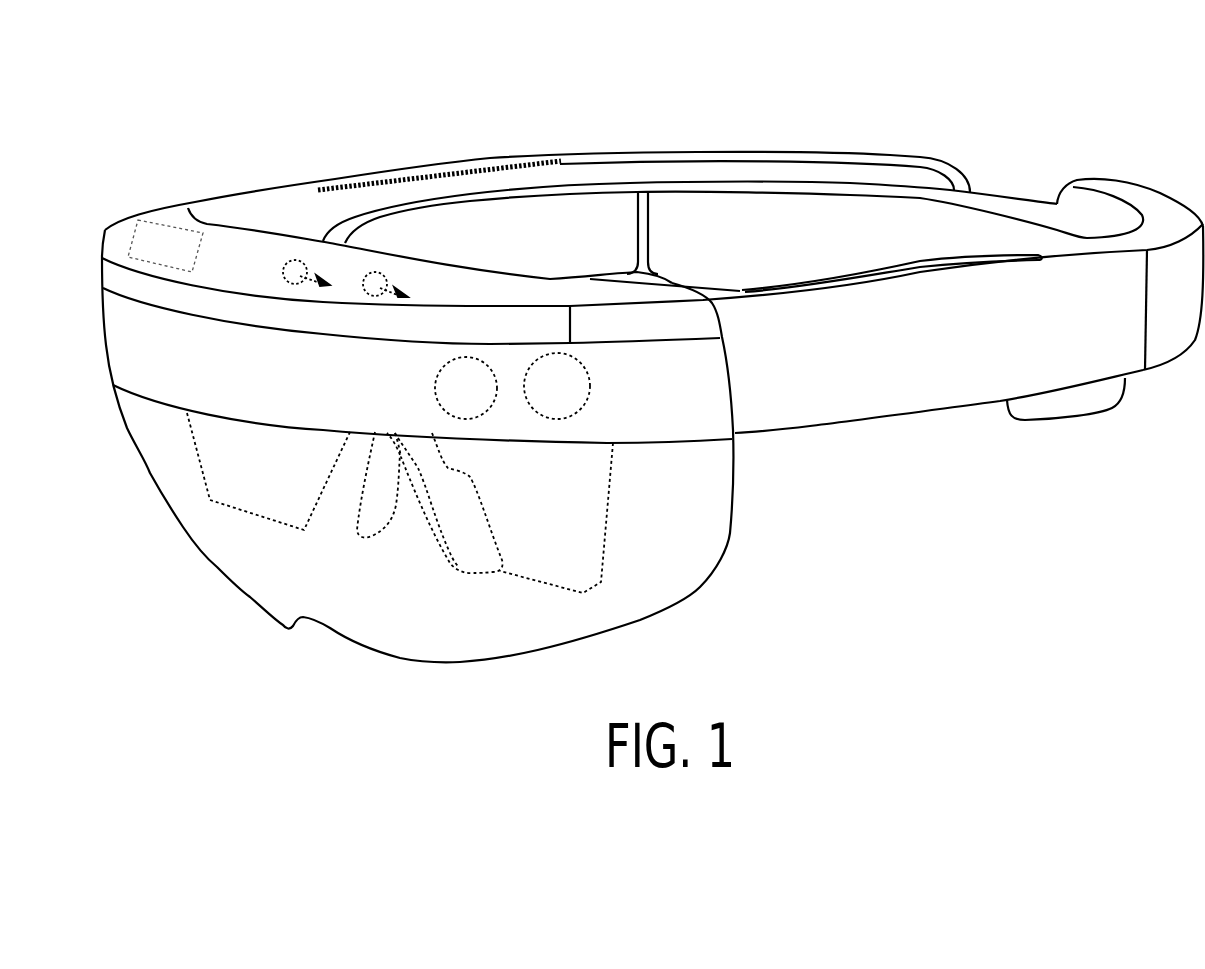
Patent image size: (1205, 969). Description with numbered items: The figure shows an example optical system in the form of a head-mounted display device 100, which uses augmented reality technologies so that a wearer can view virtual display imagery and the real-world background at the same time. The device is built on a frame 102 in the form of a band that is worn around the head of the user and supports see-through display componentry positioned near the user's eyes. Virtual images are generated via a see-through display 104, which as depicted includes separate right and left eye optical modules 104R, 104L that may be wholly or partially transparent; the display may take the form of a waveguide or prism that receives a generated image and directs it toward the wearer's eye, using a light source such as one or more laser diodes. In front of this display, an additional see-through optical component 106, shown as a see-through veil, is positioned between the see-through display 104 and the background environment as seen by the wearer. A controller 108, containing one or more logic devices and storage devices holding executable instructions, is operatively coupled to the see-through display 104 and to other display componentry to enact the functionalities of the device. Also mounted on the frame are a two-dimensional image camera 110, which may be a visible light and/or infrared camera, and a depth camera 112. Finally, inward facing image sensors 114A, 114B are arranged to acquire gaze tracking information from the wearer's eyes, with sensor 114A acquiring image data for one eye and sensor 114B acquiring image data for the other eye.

The head-mounted display device 100 is at (1106, 88).
The frame 102 is at (985, 356).
The see-through display 104 is at (608, 487).
The right eye optical module 104R is at (312, 508).
The left eye optical module 104L is at (580, 575).
The see-through optical component 106 is at (718, 563).
The controller 108 is at (178, 256).
The two-dimensional image camera 110 is at (481, 400).
The depth camera 112 is at (572, 400).
The inward facing image sensor 114A is at (375, 296).
The inward facing image sensor 114B is at (284, 272).